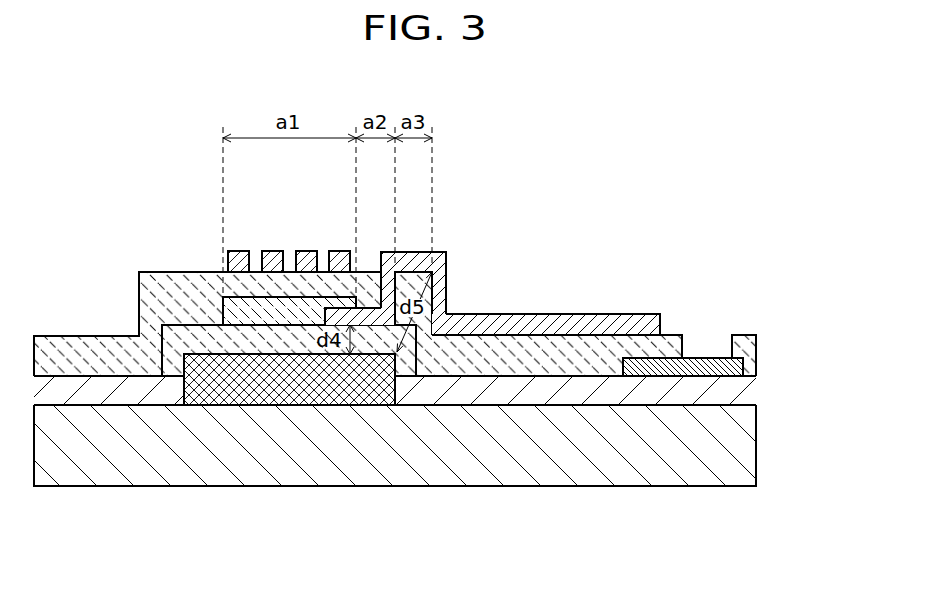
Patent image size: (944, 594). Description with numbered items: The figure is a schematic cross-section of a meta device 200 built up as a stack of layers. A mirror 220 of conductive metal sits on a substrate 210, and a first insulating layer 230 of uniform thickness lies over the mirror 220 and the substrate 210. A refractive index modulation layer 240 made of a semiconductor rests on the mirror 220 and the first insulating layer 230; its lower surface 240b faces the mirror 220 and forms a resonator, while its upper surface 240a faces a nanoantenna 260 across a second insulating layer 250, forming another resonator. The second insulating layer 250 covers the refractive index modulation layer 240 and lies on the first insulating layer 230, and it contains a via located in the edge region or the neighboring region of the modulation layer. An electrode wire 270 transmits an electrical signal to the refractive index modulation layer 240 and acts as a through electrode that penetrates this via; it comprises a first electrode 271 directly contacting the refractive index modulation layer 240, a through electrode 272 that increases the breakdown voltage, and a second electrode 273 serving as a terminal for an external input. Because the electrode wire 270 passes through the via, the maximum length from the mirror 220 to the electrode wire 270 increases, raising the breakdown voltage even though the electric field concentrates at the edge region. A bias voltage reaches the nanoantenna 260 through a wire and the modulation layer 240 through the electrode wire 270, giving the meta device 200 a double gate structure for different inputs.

The meta device 200 is at (721, 227).
The substrate 210 is at (756, 446).
The mirror 220 is at (292, 390).
The first insulating layer 230 is at (756, 389).
The refractive index modulation layer 240 is at (206, 284).
The upper surface 240a is at (255, 297).
The lower surface 240b is at (255, 327).
The second insulating layer 250 is at (756, 354).
The nanoantenna 260 is at (340, 251).
The electrode wire 270 is at (534, 265).
The first electrode 271 is at (446, 262).
The through electrode 272 is at (547, 320).
The second electrode 273 is at (710, 358).